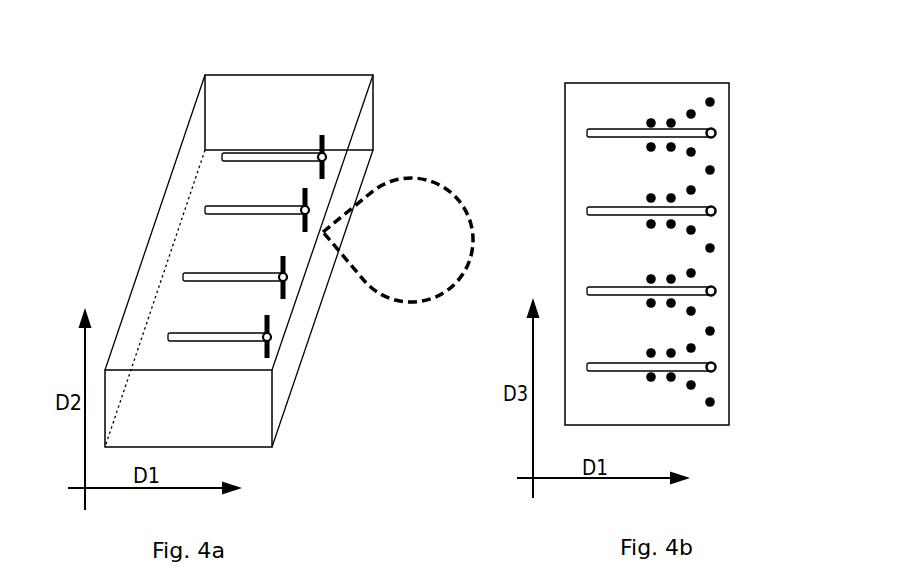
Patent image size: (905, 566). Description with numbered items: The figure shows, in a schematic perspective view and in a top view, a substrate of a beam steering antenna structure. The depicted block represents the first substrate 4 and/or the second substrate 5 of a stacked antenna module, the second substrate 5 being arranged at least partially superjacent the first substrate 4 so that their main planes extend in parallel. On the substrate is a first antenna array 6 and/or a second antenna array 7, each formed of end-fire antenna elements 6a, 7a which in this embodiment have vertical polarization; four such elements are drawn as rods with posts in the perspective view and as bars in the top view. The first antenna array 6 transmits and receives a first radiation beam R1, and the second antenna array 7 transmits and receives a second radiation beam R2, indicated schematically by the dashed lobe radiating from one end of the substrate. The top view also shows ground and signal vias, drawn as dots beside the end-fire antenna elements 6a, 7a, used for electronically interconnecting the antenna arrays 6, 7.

In FIG. 4a, the first substrate 4 is at (228, 261).
In FIG. 4a, the second substrate 5 is at (211, 236).
In FIG. 4b, the first antenna array 6 is at (709, 254).
In FIG. 4b, the second antenna array 7 is at (743, 112).
In FIG. 4a, the end-fire antenna element 6a is at (282, 194).
In FIG. 4b, the end-fire antenna element 6a is at (667, 189).
In FIG. 4a, the end-fire antenna element 7a is at (260, 152).
In FIG. 4b, the end-fire antenna element 7a is at (609, 130).
In FIG. 4a, the first radiation beam R1 is at (423, 194).
In FIG. 4a, the second radiation beam R2 is at (401, 212).